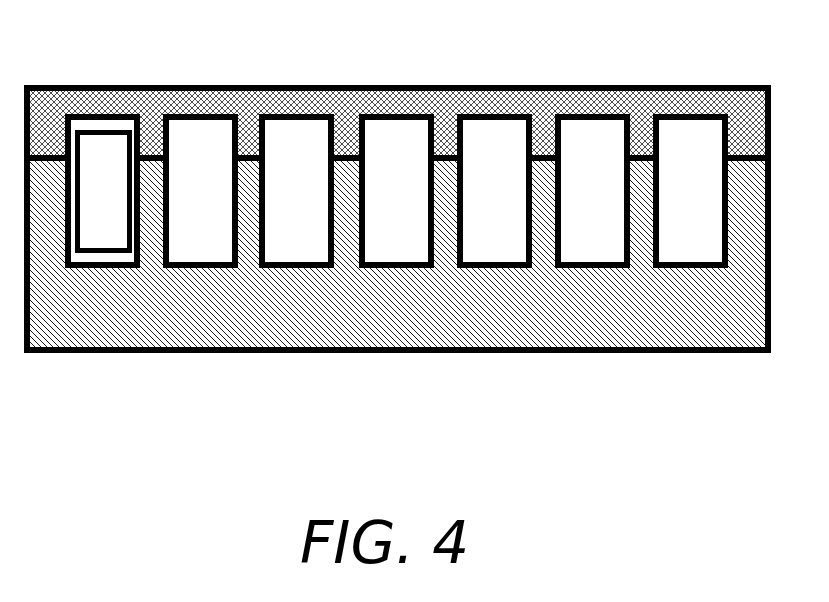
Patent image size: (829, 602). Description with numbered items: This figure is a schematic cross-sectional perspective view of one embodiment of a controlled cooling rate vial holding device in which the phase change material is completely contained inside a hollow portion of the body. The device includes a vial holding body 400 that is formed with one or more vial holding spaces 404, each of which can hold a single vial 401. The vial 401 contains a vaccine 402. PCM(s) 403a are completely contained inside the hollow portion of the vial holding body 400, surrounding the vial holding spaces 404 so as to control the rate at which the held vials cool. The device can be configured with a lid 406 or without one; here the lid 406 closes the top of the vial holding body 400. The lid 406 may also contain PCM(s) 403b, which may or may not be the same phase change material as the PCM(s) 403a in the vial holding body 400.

The vial holding body 400 is at (745, 152).
The vial 401 is at (112, 152).
The vaccine 402 is at (98, 252).
The PCM(s) 403a is at (247, 203).
The PCM(s) 403b is at (350, 115).
The vial holding spaces 404 is at (690, 242).
The lid 406 is at (493, 88).